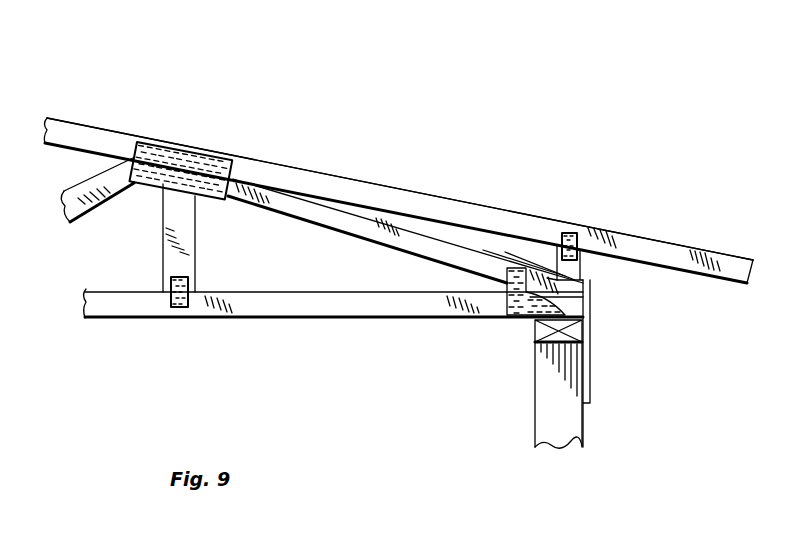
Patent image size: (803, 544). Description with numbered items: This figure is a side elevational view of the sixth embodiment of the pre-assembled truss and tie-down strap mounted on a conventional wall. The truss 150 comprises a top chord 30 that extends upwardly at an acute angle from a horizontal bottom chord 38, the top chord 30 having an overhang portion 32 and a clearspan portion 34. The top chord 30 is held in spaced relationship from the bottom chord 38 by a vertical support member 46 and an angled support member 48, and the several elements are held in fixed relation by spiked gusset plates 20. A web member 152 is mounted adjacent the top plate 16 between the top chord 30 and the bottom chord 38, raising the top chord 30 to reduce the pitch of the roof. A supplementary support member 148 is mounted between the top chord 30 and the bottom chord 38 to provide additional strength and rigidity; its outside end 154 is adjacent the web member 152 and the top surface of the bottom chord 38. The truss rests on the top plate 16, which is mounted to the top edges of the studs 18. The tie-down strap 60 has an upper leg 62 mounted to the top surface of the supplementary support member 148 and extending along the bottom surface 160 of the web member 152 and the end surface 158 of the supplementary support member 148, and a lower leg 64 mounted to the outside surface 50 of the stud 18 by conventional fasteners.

The truss 150 is at (122, 102).
The spiked gusset plate 20 is at (168, 149).
The angled support member 48 is at (102, 179).
The vertical support member 46 is at (164, 250).
The clearspan portion 34 is at (287, 163).
The top chord 30 is at (339, 175).
The overhang portion 32 is at (738, 257).
The bottom chord 38 is at (334, 323).
The supplementary support member 148 is at (404, 254).
The tie-down strap 60 is at (483, 250).
The upper leg 62 is at (505, 252).
The outside end 154 is at (547, 278).
The web member 152 is at (583, 278).
The bottom surface 160 is at (575, 290).
The end surface 158 is at (592, 302).
The top plate 16 is at (582, 331).
The stud 18 is at (547, 398).
The lower leg 64 is at (591, 383).
The outside surface 50 is at (586, 430).